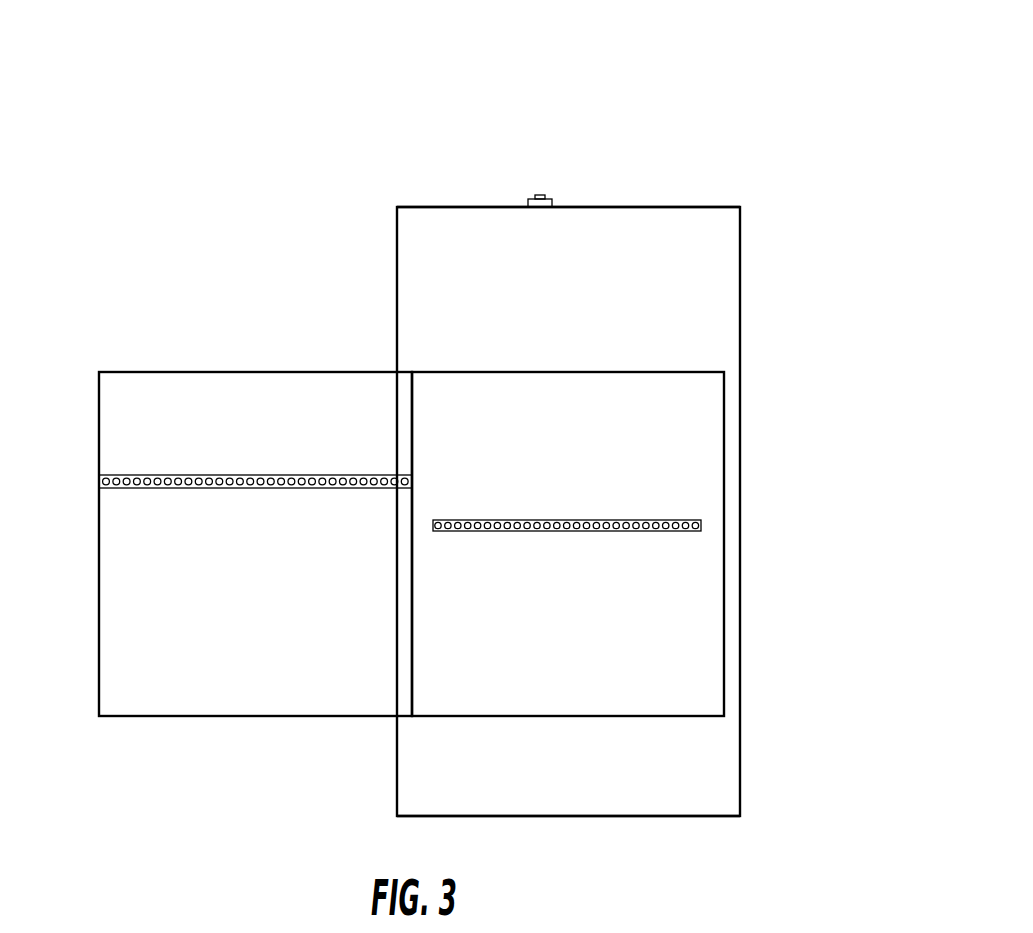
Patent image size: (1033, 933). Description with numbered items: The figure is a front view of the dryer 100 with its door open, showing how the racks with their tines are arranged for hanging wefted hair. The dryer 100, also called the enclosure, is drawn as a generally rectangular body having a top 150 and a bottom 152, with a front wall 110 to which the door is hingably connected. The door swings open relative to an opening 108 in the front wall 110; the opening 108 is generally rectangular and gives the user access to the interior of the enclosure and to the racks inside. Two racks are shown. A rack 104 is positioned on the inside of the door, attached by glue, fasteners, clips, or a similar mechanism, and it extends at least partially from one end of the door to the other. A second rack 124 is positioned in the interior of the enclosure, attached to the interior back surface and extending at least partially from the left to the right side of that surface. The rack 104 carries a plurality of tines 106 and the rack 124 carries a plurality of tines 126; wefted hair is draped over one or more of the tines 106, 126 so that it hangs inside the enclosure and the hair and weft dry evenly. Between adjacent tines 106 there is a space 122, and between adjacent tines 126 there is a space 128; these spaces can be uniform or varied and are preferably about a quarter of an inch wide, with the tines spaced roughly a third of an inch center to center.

The dryer 100 is at (313, 125).
The rack 104 is at (110, 475).
The tines 106 is at (100, 481).
The opening 108 is at (687, 370).
The front wall 110 is at (715, 230).
The space 122 is at (143, 488).
The rack 124 is at (703, 521).
The tines 126 is at (683, 528).
The space 128 is at (658, 531).
The top 150 is at (652, 203).
The bottom 152 is at (692, 818).